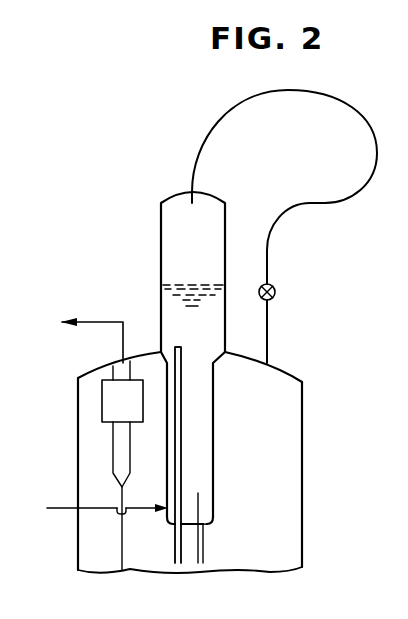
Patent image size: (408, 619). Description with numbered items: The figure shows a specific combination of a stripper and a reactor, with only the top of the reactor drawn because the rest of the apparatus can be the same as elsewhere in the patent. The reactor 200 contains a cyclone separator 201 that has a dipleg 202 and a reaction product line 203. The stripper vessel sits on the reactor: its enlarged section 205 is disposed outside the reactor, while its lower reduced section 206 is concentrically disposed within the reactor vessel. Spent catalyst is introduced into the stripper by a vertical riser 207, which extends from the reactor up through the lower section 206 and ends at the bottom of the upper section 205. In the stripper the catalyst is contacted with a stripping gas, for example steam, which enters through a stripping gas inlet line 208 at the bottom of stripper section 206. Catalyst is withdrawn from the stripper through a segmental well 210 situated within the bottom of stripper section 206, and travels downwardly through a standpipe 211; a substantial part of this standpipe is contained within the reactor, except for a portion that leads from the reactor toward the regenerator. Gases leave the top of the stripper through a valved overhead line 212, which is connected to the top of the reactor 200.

The reactor 200 is at (302, 484).
The cyclone separator 201 is at (102, 398).
The dipleg 202 is at (118, 527).
The reaction product line 203 is at (103, 311).
The enlarged section 205 is at (161, 243).
The lower reduced section 206 is at (213, 441).
The vertical riser 207 is at (176, 551).
The stripping gas inlet line 208 is at (68, 508).
The segmental well 210 is at (204, 511).
The standpipe 211 is at (203, 548).
The valved overhead line 212 is at (362, 127).